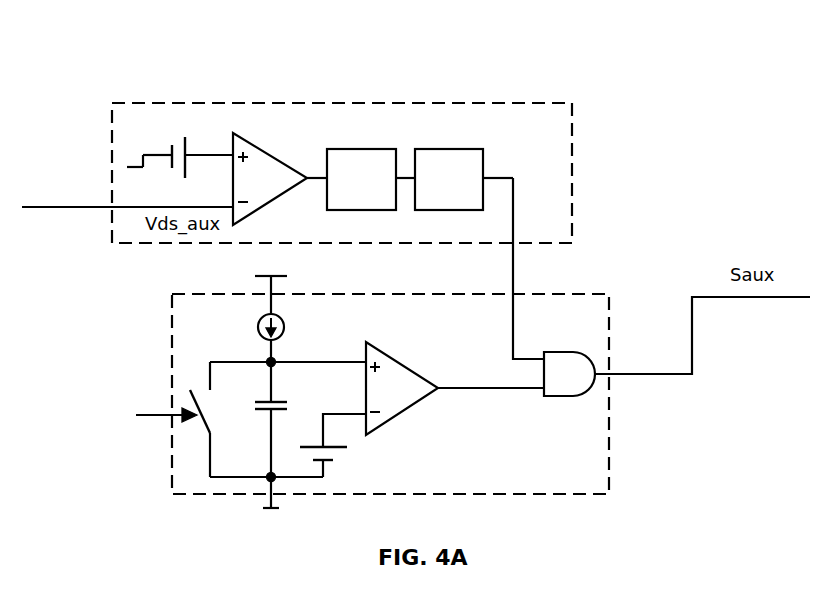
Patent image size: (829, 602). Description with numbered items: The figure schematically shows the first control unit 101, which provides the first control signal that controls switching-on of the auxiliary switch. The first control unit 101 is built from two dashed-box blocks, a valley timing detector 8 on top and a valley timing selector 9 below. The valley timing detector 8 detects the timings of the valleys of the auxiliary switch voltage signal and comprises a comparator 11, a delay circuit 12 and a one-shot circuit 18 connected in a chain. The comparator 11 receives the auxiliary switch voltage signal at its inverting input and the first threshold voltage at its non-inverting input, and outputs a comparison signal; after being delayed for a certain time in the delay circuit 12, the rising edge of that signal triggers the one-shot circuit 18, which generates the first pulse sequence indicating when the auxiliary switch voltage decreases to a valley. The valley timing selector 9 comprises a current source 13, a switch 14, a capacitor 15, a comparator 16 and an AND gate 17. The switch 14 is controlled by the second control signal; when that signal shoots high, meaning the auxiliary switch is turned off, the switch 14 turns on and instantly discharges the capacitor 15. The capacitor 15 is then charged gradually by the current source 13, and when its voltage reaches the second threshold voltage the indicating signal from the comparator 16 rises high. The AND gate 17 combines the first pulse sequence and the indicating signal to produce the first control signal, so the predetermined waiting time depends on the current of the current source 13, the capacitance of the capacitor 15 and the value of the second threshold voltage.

The first control unit 101 is at (667, 46).
The valley timing detector 8 is at (573, 128).
The valley timing selector 9 is at (553, 293).
The comparator 11 is at (270, 177).
The delay circuit 12 is at (361, 168).
The 1-shot circuit 18 is at (449, 168).
The current source 13 is at (285, 327).
The switch 14 is at (212, 419).
The capacitor 15 is at (265, 420).
The comparator 16 is at (402, 388).
The AND gate 17 is at (569, 360).